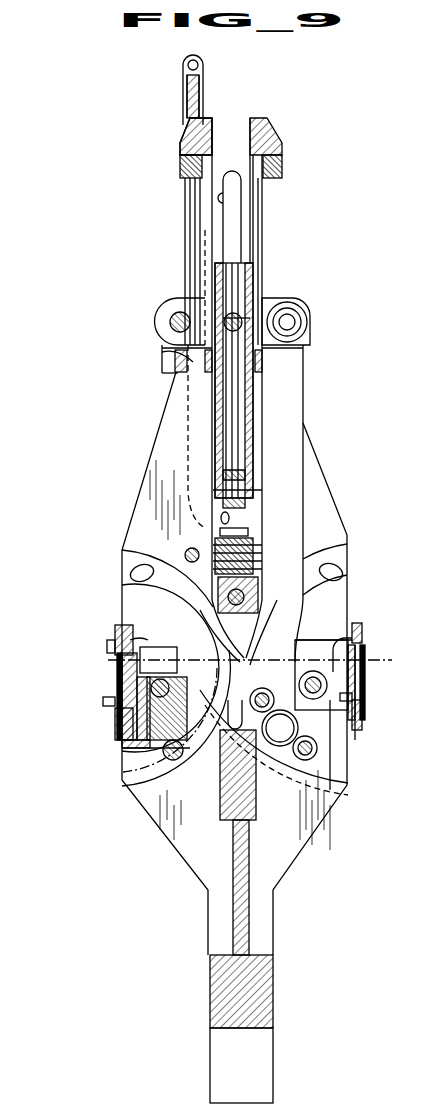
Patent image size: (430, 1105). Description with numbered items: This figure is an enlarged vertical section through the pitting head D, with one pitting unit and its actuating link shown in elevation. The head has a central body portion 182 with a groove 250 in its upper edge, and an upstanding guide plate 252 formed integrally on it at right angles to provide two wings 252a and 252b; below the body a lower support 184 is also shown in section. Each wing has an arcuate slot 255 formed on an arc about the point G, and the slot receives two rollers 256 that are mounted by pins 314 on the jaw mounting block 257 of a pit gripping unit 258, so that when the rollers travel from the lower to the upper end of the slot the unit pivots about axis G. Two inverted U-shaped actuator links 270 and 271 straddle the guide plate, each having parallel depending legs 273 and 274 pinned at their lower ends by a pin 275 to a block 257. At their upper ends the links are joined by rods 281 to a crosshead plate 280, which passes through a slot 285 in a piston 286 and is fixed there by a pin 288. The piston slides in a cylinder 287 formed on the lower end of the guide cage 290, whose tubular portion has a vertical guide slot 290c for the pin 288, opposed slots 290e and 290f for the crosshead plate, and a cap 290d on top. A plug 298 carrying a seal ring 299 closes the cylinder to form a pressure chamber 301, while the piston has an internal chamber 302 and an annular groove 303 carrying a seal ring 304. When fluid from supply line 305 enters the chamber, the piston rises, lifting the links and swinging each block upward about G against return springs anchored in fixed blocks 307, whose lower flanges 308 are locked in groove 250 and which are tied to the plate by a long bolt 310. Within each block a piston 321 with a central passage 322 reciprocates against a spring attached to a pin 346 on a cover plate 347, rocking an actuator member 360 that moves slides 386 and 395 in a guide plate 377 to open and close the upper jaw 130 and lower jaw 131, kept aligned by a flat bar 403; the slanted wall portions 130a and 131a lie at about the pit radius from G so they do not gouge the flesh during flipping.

The upper jaw 130 is at (123, 640).
The slanted outer wall portion 130a is at (112, 645).
The lower jaw 131 is at (116, 720).
The slanted outer wall portion 131a is at (110, 704).
The central body portion 182 is at (245, 913).
The base block 184 is at (250, 982).
The groove 250 is at (252, 785).
The guide plate 252 is at (181, 864).
The wing 252a is at (122, 838).
The wing 252b is at (313, 473).
The arcuate slot 255 is at (133, 578).
The rollers 256 is at (193, 770).
The jaw mounting block 257 is at (308, 768).
The pit gripping unit 258 is at (118, 746).
The actuator link 270 is at (162, 361).
The actuator link 271 is at (305, 371).
The depending leg 273 is at (300, 356).
The depending leg 274 is at (170, 386).
The pin 275 is at (280, 728).
The crosshead plate 280 is at (268, 300).
The rod 281 is at (178, 324).
The slot 285 is at (226, 298).
The piston 286 is at (232, 280).
The cylinder 287 is at (255, 397).
The crosshead pin 288 is at (238, 316).
The guide cage 290 is at (264, 211).
The vertical guide slot 290c is at (225, 198).
The cap 290d is at (282, 136).
The slot 290e is at (205, 228).
The slot 290f is at (262, 220).
The plug 298 is at (255, 550).
The seal ring 299 is at (250, 532).
The pressure chamber 301 is at (250, 510).
The internal chamber 302 is at (232, 427).
The annular groove 303 is at (252, 482).
The seal ring 304 is at (218, 500).
The supply line 305 is at (183, 105).
The fixed block 307 is at (188, 165).
The lower flange 308 is at (190, 360).
The long bolt 310 is at (238, 596).
The pins 314 is at (173, 760).
The piston 321 is at (244, 689).
The central passage 322 is at (242, 675).
The pin 346 is at (352, 698).
The cover plate 347 is at (345, 765).
The actuator member 360 is at (165, 748).
The guide plate 377 is at (138, 690).
The slide 386 is at (160, 618).
The slide 395 is at (118, 731).
The flat bar 403 is at (117, 660).
The pitting head D is at (264, 240).
The pivot axis G is at (120, 669).